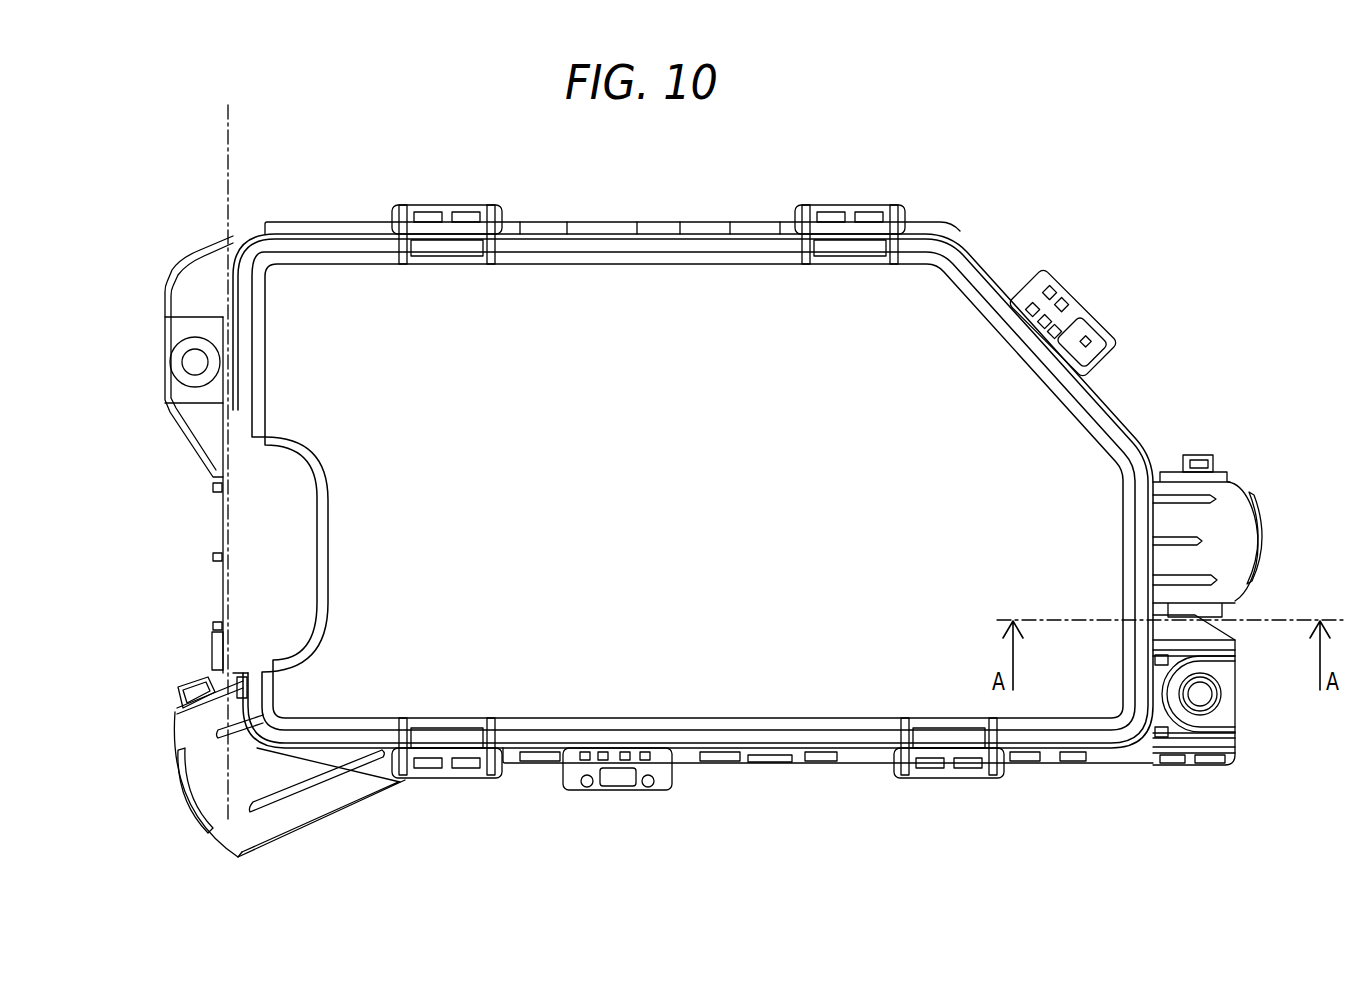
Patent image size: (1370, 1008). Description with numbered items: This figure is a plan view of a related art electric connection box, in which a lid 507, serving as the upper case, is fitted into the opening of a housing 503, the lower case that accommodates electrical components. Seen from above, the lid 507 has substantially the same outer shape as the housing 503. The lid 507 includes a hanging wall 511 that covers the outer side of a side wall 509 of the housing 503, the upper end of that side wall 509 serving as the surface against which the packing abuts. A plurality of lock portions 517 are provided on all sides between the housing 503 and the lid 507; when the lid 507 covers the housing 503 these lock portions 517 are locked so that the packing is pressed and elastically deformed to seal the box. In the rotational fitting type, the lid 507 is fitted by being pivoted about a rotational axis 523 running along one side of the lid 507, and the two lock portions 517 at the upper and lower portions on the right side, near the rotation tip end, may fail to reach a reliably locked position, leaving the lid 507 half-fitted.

The housing 503 is at (164, 284).
The lid 507 is at (1142, 758).
The side wall 509 is at (1153, 527).
The hanging wall 511 is at (1153, 563).
The lock portions 517 is at (439, 202).
The rotational axis 523 is at (236, 131).